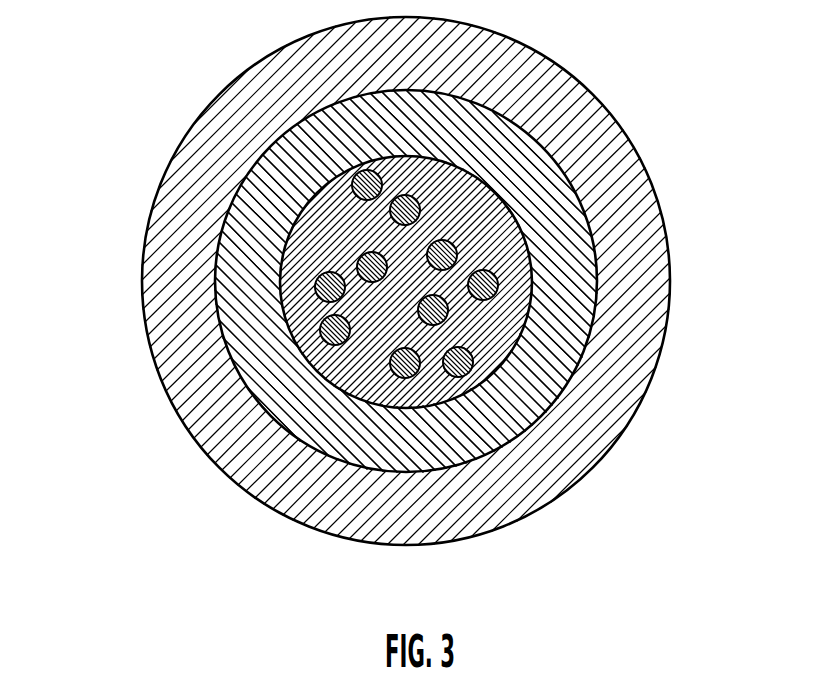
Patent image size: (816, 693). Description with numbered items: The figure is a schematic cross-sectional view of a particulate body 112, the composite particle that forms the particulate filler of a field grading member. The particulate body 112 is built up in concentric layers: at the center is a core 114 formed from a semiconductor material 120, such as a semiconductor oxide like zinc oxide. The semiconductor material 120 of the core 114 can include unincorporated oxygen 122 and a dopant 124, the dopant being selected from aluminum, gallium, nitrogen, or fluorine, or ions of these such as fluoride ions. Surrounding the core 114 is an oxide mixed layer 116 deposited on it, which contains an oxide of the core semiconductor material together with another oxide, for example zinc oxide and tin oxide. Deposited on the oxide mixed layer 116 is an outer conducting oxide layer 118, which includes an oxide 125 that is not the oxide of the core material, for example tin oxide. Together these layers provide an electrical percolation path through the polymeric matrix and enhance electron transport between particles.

The particulate body 112 is at (141, 521).
The core 114 is at (440, 385).
The oxide mixed layer 116 is at (502, 428).
The conducting oxide layer 118 is at (650, 328).
The semiconductor material 120 is at (483, 218).
The unincorporated oxygen 122 is at (398, 372).
The dopant 124 is at (317, 297).
The oxide 125 is at (590, 420).